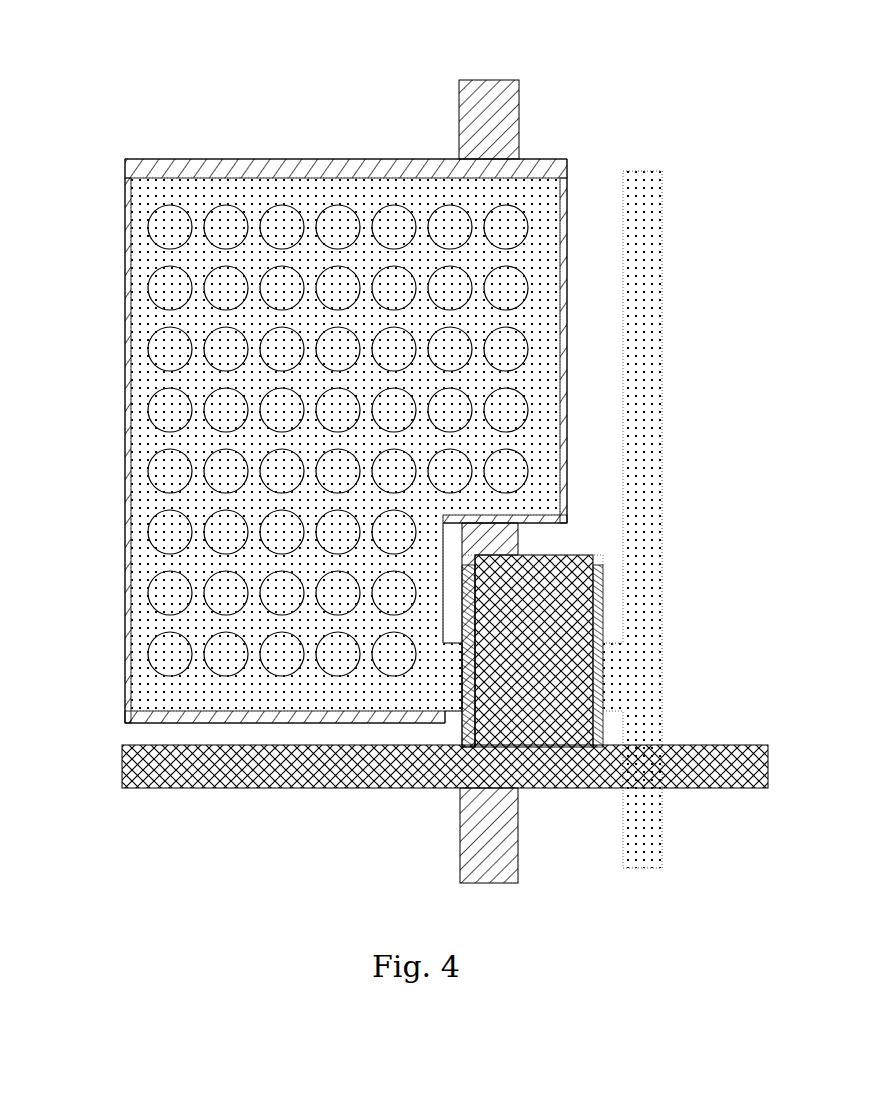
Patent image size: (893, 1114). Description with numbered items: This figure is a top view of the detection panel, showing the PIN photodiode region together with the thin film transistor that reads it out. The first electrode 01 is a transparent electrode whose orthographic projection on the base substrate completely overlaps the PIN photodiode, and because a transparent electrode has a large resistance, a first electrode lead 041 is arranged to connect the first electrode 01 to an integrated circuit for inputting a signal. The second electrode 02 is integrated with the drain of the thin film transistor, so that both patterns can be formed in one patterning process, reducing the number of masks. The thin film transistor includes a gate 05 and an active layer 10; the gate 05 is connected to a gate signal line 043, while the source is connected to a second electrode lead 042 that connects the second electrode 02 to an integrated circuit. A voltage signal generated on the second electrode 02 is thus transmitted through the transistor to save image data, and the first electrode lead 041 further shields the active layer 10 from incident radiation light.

The first electrode 01 is at (302, 428).
The second electrode 02 is at (167, 692).
The first electrode lead 041 is at (483, 103).
The second electrode lead 042 is at (645, 403).
The gate signal line 043 is at (717, 772).
The gate 05 is at (603, 582).
The active layer 10 is at (603, 608).